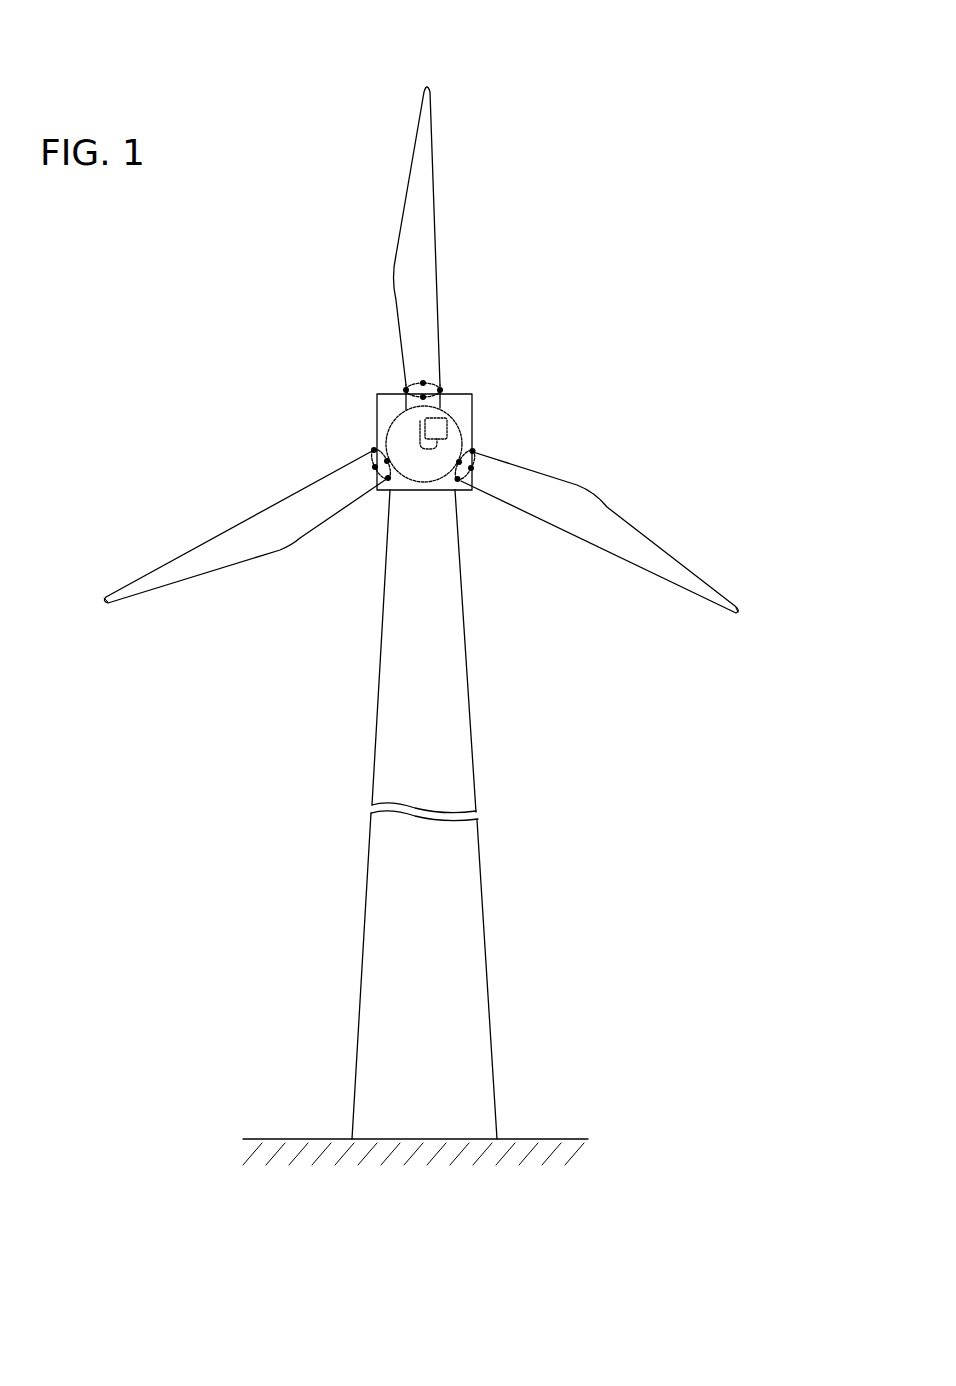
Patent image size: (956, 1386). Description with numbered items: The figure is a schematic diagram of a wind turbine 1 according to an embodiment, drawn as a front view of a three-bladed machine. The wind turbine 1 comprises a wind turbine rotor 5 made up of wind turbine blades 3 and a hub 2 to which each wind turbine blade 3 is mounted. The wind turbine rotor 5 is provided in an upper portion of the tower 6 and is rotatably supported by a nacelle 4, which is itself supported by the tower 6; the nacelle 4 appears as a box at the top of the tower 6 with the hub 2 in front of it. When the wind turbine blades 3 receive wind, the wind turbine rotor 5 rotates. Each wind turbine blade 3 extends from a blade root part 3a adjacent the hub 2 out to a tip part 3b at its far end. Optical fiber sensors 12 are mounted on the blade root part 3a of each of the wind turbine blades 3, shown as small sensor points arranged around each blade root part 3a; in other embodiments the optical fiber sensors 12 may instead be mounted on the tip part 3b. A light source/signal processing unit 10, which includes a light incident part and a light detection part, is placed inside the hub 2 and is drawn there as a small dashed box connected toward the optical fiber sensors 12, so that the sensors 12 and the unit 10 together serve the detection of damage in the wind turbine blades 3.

The wind turbine 1 is at (637, 154).
The hub 2 is at (417, 470).
The wind turbine blade 3 is at (438, 242).
The blade root part 3a is at (458, 376).
The tip part 3b is at (403, 104).
The nacelle 4 is at (377, 396).
The wind turbine rotor 5 is at (392, 395).
The tower 6 is at (478, 752).
The light source/signal processing unit 10 is at (447, 428).
The optical fiber sensor 12 is at (424, 396).